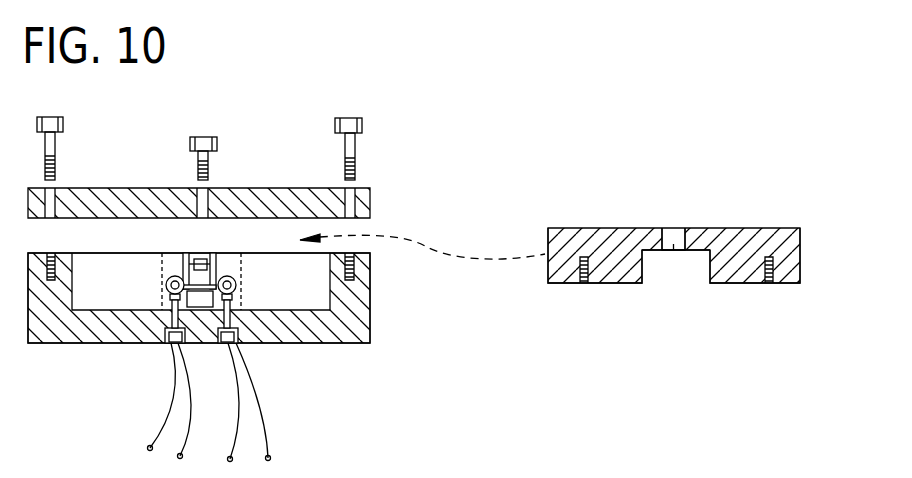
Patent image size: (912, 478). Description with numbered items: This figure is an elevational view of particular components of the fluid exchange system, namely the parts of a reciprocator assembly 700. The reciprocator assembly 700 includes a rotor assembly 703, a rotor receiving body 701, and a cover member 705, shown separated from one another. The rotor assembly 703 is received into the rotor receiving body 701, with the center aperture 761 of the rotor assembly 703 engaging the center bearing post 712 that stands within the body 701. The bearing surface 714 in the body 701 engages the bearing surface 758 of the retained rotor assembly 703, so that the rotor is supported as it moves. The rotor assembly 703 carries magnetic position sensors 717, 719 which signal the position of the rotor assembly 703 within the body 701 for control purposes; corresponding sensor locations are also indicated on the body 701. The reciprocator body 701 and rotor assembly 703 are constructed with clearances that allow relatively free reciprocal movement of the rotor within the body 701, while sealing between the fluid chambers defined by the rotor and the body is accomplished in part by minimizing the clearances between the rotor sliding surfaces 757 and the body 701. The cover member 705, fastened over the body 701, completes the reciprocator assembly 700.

The reciprocator assembly 700 is at (375, 322).
The rotor receiving body 701 is at (357, 337).
The rotor assembly 703 is at (801, 242).
The cover member 705 is at (317, 219).
The center bearing post 712 is at (207, 257).
The bearing surface 714 is at (178, 270).
The magnetic position sensor 717 is at (233, 345).
The magnetic position sensor 719 is at (165, 345).
The rotor sliding surface 757 is at (545, 270).
The bearing surface 758 is at (653, 252).
The center aperture 761 is at (675, 232).